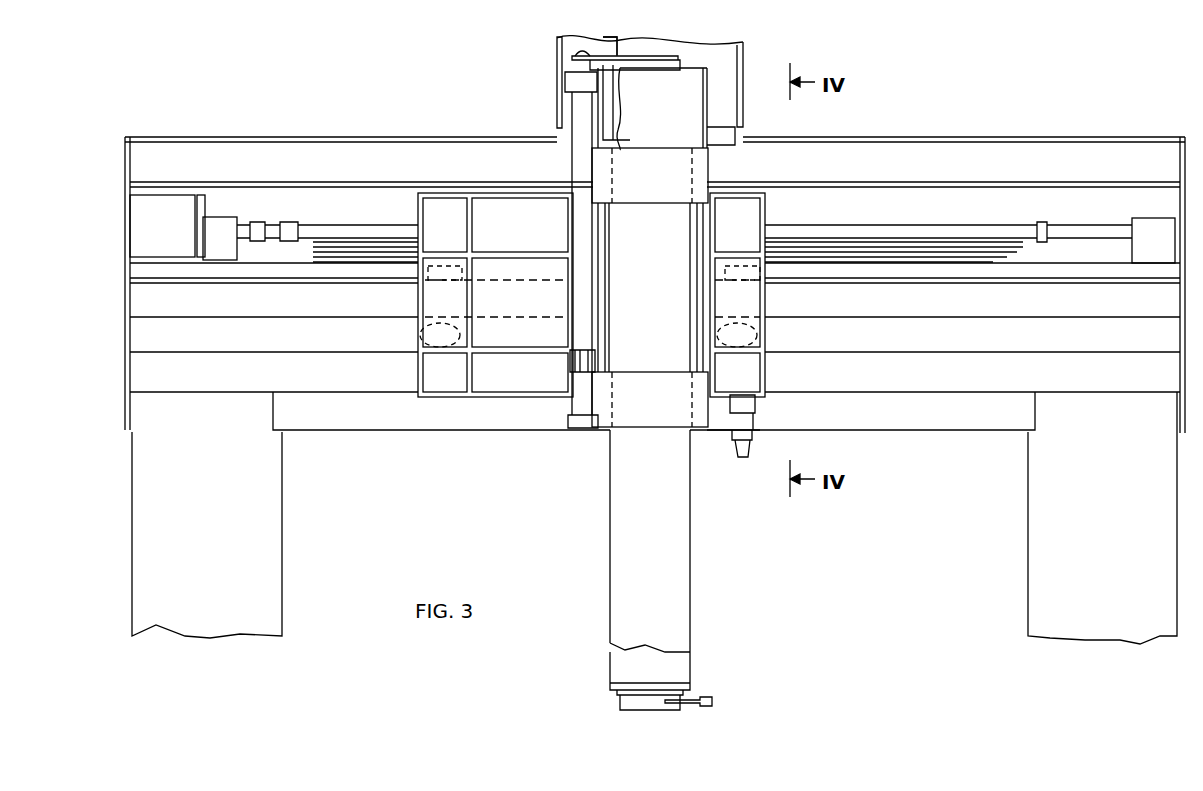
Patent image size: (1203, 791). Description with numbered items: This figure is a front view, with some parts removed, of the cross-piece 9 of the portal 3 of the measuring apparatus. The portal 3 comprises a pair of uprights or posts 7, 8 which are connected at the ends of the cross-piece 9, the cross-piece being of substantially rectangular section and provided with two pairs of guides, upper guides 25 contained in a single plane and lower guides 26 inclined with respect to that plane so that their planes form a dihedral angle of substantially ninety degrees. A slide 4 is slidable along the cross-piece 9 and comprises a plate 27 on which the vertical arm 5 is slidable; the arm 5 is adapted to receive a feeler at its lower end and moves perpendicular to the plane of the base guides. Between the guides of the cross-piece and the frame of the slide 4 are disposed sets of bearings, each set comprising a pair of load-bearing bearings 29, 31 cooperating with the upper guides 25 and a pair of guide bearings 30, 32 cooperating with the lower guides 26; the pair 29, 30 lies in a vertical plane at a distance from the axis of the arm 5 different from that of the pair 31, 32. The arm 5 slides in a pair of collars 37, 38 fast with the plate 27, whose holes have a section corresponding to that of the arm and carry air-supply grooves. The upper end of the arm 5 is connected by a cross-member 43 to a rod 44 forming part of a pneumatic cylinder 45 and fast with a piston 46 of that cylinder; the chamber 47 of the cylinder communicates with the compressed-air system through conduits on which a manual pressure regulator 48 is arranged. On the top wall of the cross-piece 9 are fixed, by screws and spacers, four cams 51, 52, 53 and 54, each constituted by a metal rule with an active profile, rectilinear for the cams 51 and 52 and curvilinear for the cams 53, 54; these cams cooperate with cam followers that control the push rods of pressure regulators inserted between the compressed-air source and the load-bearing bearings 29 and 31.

The portal 3 is at (855, 122).
The slide 4 is at (487, 412).
The vertical arm 5 is at (672, 575).
The upright 7 is at (1048, 556).
The upright 8 is at (146, 537).
The cross-piece 9 is at (836, 409).
The upper guides 25 is at (916, 276).
The lower guides 26 is at (862, 340).
The plate 27 is at (527, 338).
The load-bearing bearing 29 is at (773, 276).
The guide bearing 30 is at (775, 343).
The load-bearing bearing 31 is at (414, 276).
The guide bearing 32 is at (412, 342).
The collar 37 is at (700, 166).
The collar 38 is at (645, 420).
The cross-member 43 is at (615, 60).
The rod 44 is at (568, 82).
The pneumatic cylinder 45 is at (559, 290).
The piston 46 is at (595, 378).
The chamber 47 is at (577, 397).
The manual pressure regulator 48 is at (755, 440).
The cam 51 is at (975, 265).
The cam 52 is at (990, 262).
The cam 53 is at (1010, 262).
The cam 54 is at (1025, 246).